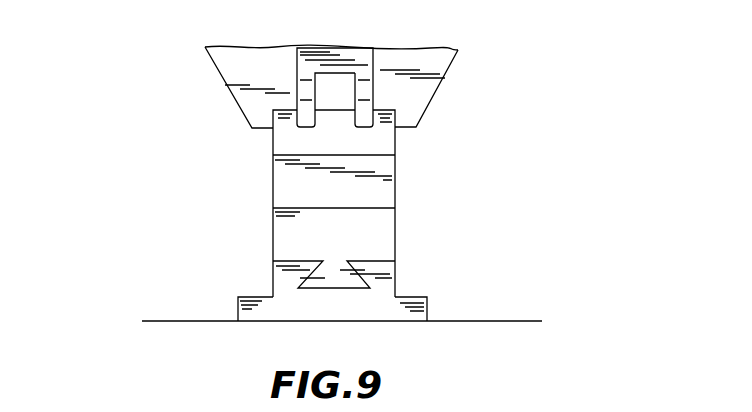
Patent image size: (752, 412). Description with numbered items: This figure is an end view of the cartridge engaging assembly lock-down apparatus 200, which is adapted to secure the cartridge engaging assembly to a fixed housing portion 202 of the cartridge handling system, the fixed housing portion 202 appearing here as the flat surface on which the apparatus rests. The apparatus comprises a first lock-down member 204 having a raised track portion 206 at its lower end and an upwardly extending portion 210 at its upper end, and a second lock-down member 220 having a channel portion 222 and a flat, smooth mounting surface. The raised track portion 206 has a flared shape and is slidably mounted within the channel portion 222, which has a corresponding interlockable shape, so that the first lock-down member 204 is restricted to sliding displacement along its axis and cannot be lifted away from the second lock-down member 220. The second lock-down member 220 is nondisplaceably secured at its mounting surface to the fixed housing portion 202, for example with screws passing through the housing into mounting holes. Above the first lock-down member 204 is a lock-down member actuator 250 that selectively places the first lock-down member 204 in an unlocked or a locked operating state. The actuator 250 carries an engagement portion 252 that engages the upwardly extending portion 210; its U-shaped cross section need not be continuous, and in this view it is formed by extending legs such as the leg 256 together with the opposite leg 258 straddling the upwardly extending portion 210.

The cartridge engaging assembly lock-down apparatus 200 is at (162, 173).
The fixed housing portion 202 is at (500, 321).
The first lock-down member 204 is at (385, 232).
The raised track portion 206 is at (352, 278).
The upwardly extending portion 210 is at (372, 140).
The second lock-down member 220 is at (362, 308).
The channel portion 222 is at (333, 288).
The lock-down member actuator 250 is at (357, 77).
The engagement portion 252 is at (423, 90).
The extending leg 256 is at (303, 97).
The right leg 258 is at (367, 100).